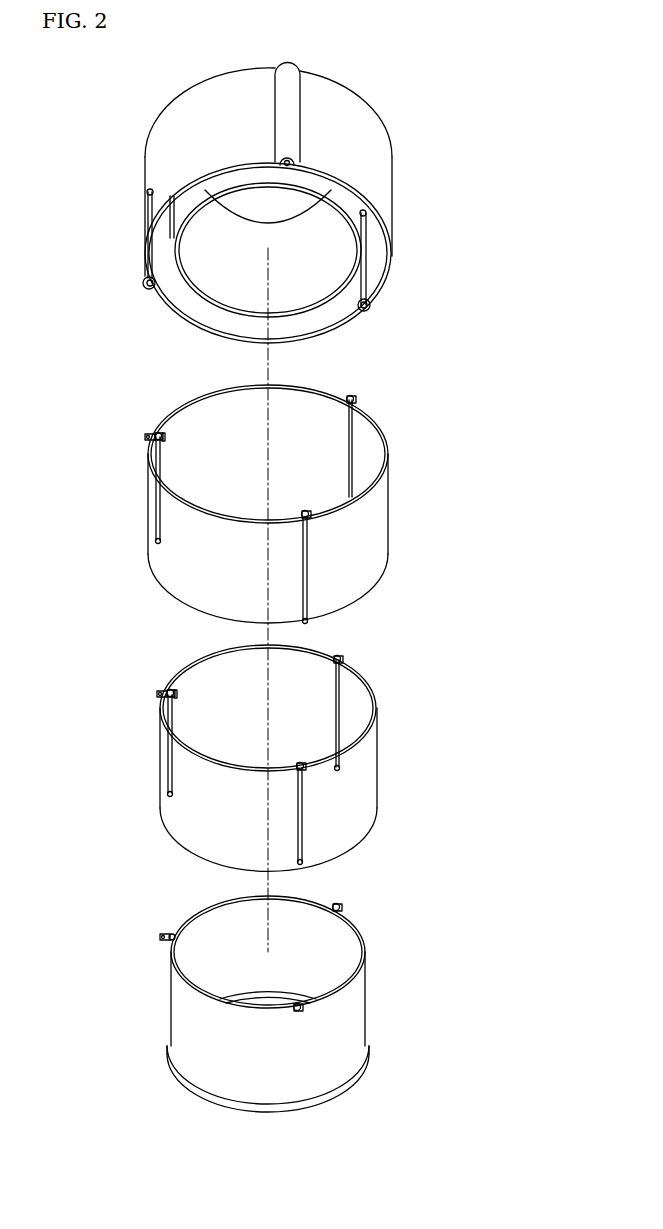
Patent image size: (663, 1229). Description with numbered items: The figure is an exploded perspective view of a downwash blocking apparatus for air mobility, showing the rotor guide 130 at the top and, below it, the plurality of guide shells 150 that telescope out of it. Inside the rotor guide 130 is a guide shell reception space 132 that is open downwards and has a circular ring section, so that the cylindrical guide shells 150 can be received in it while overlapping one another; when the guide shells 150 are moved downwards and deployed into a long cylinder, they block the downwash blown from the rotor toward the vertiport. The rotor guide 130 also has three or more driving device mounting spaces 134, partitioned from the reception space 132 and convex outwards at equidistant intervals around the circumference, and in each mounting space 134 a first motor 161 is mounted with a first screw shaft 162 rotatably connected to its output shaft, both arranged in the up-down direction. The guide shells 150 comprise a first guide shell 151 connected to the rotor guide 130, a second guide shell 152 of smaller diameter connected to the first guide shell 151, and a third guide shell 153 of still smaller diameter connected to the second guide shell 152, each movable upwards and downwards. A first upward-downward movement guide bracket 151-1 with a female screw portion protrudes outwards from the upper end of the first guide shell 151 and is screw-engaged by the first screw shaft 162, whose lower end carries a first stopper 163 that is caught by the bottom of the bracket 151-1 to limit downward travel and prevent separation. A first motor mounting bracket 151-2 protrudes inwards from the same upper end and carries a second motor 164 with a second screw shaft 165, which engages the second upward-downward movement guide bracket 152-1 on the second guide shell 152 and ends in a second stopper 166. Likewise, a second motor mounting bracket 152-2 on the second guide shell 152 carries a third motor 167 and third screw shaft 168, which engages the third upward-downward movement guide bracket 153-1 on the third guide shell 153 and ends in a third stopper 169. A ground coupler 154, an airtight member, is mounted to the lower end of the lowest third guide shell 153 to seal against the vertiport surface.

The rotor guide 130 is at (277, 214).
The guide shell reception space 132 is at (182, 303).
The driving device mounting space 134 is at (302, 97).
The first motor 161 is at (147, 193).
The first screw shaft 162 is at (150, 212).
The first stopper 163 is at (148, 296).
The guide shells 150 is at (286, 745).
The first guide shell 151 is at (253, 504).
The first upward-downward movement guide bracket 151-1 is at (145, 437).
The first motor mounting bracket 151-2 is at (166, 438).
The second motor 164 is at (154, 433).
The second screw shaft 165 is at (162, 460).
The second stopper 166 is at (156, 546).
The second guide shell 152 is at (262, 758).
The second upward-downward movement guide bracket 152-1 is at (157, 694).
The second motor mounting bracket 152-2 is at (178, 695).
The third motor 167 is at (170, 689).
The third screw shaft 168 is at (174, 720).
The third stopper 169 is at (170, 797).
The third guide shell 153 is at (280, 1002).
The third upward-downward movement guide bracket 153-1 is at (160, 937).
The ground coupler 154 is at (370, 1057).